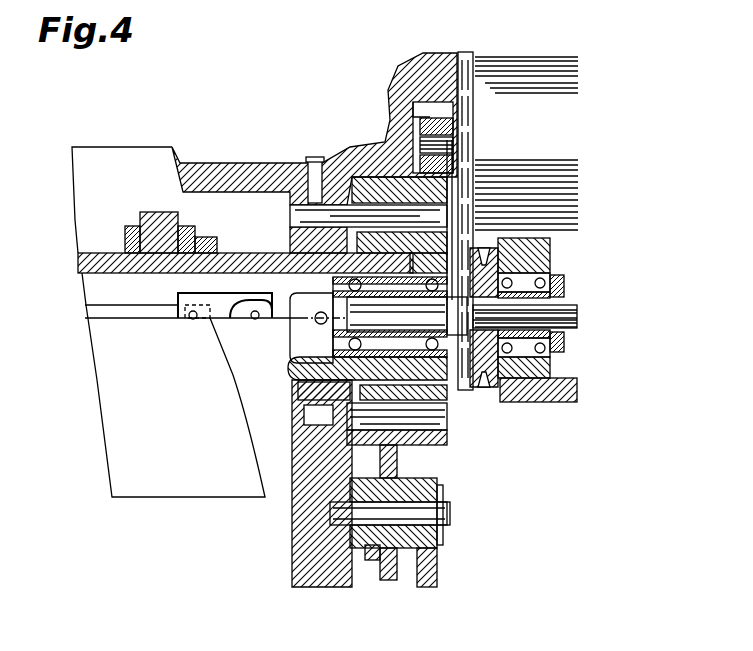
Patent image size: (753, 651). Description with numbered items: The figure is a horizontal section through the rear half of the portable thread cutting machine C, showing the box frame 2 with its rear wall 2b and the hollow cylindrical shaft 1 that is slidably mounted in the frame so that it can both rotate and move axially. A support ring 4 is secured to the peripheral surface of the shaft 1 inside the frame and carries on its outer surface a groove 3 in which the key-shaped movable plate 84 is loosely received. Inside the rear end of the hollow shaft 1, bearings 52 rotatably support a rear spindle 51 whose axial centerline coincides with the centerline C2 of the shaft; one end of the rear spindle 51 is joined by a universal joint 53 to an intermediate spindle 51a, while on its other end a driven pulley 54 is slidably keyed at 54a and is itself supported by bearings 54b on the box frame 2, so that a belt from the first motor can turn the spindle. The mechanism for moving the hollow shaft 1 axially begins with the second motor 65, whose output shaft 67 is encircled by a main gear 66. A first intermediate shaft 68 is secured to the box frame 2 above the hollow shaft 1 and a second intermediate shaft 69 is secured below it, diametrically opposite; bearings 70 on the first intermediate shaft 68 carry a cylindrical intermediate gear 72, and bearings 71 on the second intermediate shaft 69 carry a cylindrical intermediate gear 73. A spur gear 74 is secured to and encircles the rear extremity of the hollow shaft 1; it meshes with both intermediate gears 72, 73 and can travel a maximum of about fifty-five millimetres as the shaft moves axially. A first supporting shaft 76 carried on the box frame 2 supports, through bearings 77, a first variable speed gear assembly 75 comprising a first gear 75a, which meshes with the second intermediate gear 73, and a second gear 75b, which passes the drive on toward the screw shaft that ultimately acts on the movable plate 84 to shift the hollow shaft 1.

The portable thread cutting machine C is at (110, 137).
The box frame 2 is at (238, 165).
The hollow cylindrical shaft 1 is at (93, 258).
The movable plate 84 is at (150, 212).
The support ring 4 is at (128, 225).
The groove 3 is at (181, 238).
The intermediate spindle 51a is at (112, 313).
The universal joint 53 is at (215, 319).
The bearings 52 is at (282, 318).
The axial centerline of the hollow shaft C2 is at (300, 318).
The cylindrical intermediate gear 72 is at (290, 242).
The first intermediate shaft 68 is at (358, 210).
The main gear 66 is at (420, 120).
The output shaft 67 is at (420, 138).
The bearings 70 is at (447, 177).
The spur gear 74 is at (447, 257).
The second motor 65 is at (537, 63).
The bearings 54b is at (550, 273).
The key 54a is at (553, 303).
The driven pulley 54 is at (483, 377).
The rear spindle 51 is at (287, 384).
The second intermediate shaft 69 is at (442, 412).
The bearings 71 is at (453, 433).
The cylindrical intermediate gear 73 is at (427, 443).
The rear wall 2b is at (298, 514).
The first variable speed gear assembly 75 is at (458, 496).
The first supporting shaft 76 is at (450, 517).
The second gear 75b is at (437, 538).
The first gear 75a is at (390, 578).
The bearings 77 is at (372, 552).